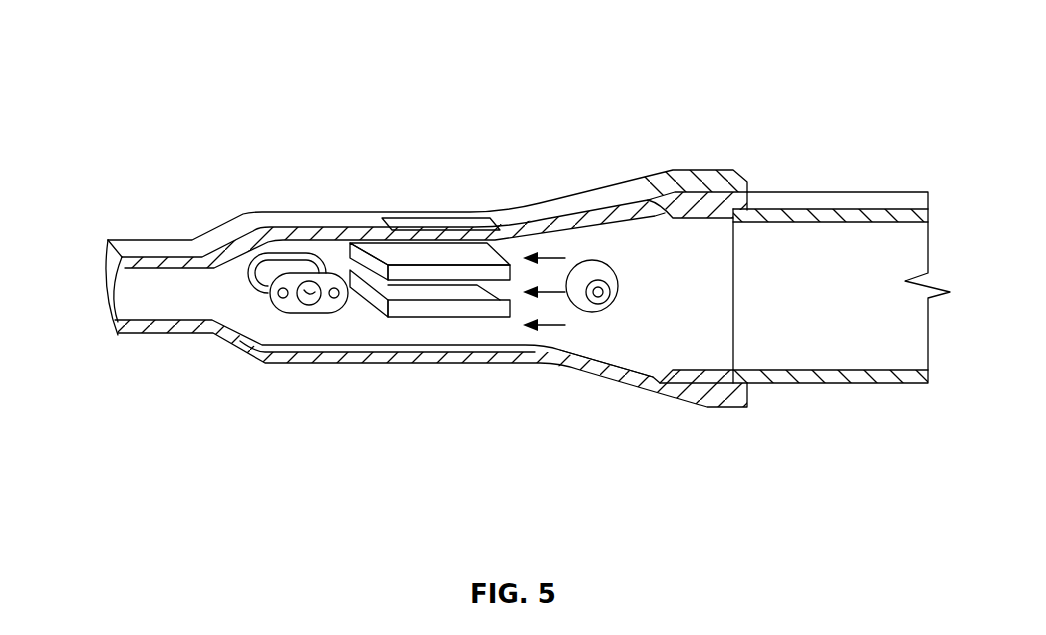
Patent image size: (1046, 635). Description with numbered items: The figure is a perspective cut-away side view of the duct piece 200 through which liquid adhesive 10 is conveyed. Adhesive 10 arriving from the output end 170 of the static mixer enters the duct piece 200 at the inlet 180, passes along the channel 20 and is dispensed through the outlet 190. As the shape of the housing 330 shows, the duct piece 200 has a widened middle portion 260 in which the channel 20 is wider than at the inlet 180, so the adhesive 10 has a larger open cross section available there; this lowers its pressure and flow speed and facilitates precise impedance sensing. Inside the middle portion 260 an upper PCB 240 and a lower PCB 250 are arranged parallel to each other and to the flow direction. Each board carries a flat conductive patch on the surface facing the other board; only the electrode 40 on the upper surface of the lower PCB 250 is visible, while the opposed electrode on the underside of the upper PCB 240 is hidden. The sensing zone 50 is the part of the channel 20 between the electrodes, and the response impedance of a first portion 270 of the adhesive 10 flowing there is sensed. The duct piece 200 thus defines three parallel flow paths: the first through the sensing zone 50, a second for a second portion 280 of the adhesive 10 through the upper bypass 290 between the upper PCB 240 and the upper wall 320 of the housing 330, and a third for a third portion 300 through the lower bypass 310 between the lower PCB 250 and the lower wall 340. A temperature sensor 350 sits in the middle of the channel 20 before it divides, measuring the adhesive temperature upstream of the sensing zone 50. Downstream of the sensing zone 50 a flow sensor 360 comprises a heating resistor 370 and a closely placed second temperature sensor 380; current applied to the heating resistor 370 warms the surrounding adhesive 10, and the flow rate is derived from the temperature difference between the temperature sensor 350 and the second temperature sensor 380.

The duct piece 200 is at (296, 54).
The outlet 190 is at (145, 296).
The channel 20 is at (192, 308).
The adhesive 10 is at (893, 311).
The output end of the static mixer 170 is at (863, 208).
The inlet 180 is at (697, 238).
The housing 330 is at (333, 209).
The upper wall 320 is at (357, 214).
The lower wall 340 is at (383, 355).
The third portion of the adhesive 300 is at (572, 357).
The flow sensor 360 is at (300, 258).
The sensing zone 50 is at (352, 300).
The second temperature sensor 380 is at (287, 298).
The heating resistor 370 is at (312, 296).
The middle portion 260 is at (425, 172).
The upper bypass 290 is at (433, 257).
The upper PCB 240 is at (512, 267).
The electrode 40 is at (418, 295).
The lower PCB 250 is at (483, 312).
The lower bypass 310 is at (455, 302).
The second portion of the adhesive 280 is at (551, 258).
The first portion of the adhesive 270 is at (558, 290).
The temperature sensor 350 is at (600, 291).